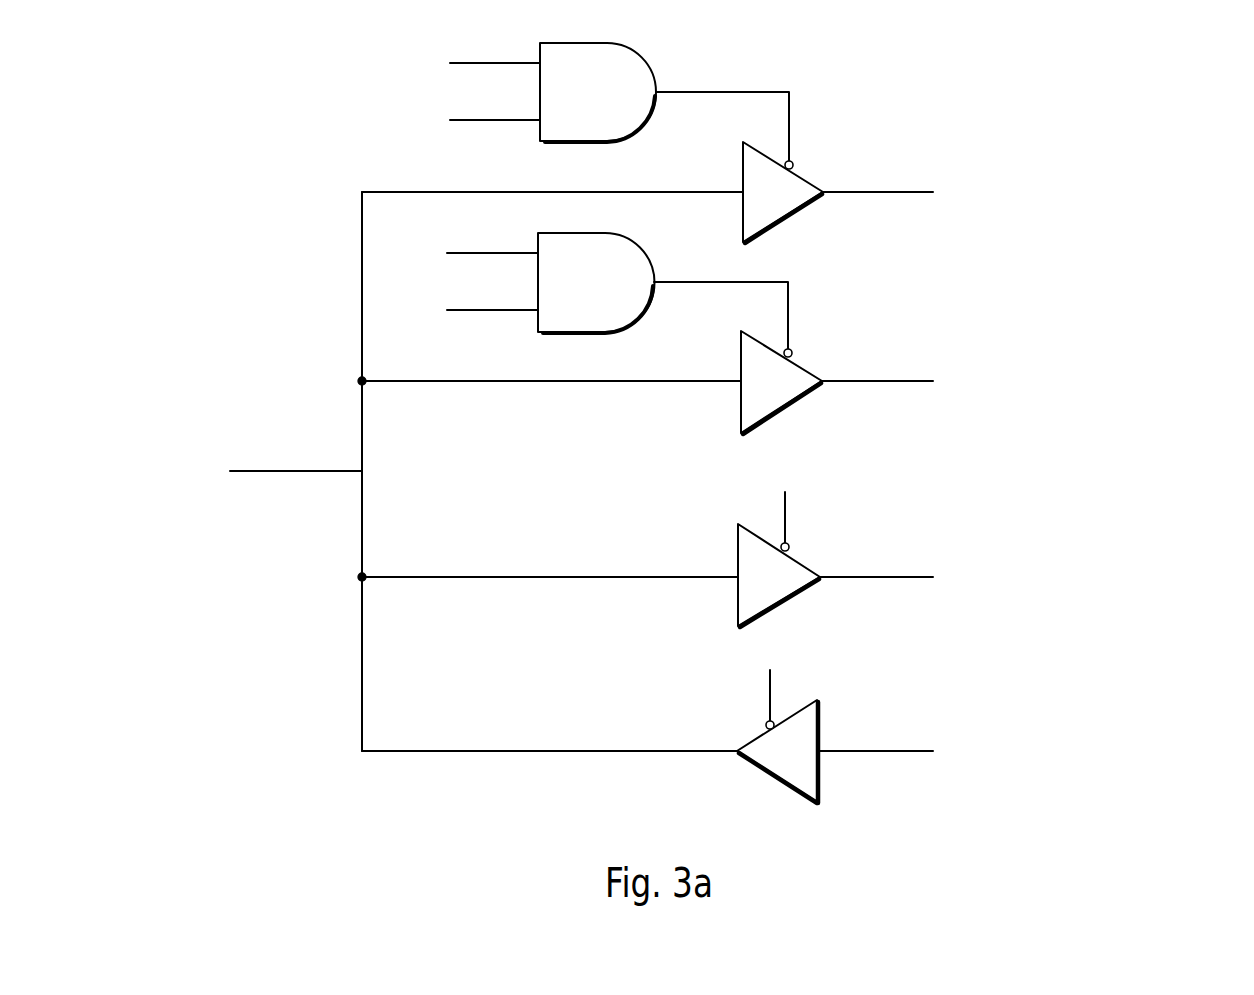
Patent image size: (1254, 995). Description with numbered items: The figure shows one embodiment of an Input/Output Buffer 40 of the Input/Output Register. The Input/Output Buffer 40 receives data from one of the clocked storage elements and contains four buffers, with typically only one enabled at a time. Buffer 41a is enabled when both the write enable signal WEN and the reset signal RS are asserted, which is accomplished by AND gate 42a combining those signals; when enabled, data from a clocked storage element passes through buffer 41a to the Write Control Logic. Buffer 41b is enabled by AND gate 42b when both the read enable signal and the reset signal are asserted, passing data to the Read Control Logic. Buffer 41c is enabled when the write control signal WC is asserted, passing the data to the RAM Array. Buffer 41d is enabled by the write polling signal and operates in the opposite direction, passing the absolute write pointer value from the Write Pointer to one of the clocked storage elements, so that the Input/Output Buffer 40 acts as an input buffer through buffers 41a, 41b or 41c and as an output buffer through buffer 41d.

The Input/Output Buffer 40 is at (675, 837).
The buffer 41a is at (783, 192).
The buffer 41b is at (781, 382).
The buffer 41c is at (779, 575).
The buffer 41d is at (777, 751).
The AND gate 42a is at (598, 92).
The AND gate 42b is at (596, 283).